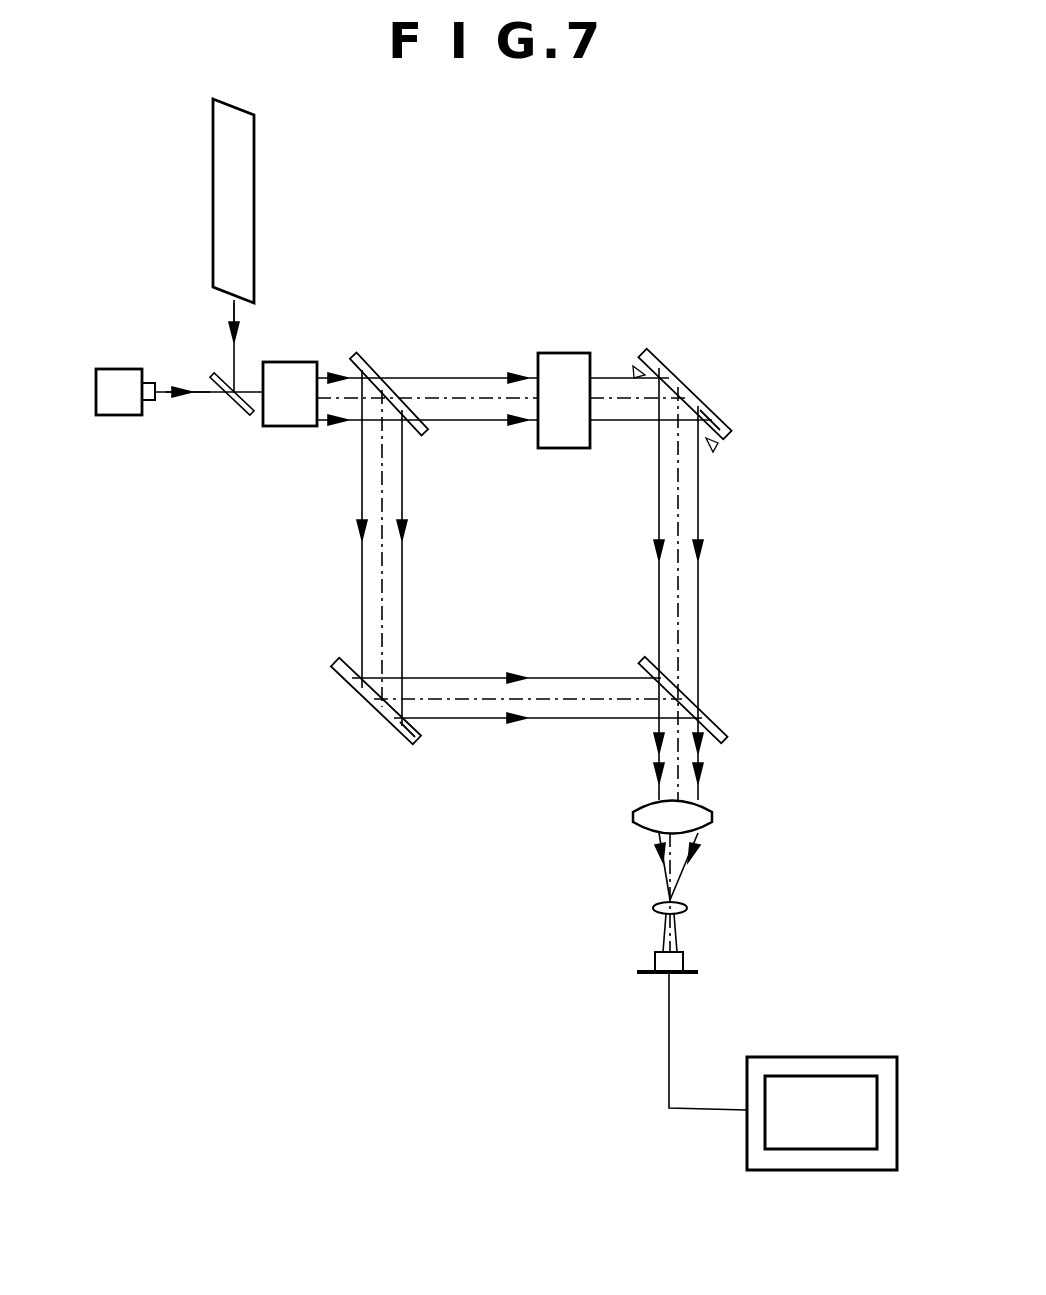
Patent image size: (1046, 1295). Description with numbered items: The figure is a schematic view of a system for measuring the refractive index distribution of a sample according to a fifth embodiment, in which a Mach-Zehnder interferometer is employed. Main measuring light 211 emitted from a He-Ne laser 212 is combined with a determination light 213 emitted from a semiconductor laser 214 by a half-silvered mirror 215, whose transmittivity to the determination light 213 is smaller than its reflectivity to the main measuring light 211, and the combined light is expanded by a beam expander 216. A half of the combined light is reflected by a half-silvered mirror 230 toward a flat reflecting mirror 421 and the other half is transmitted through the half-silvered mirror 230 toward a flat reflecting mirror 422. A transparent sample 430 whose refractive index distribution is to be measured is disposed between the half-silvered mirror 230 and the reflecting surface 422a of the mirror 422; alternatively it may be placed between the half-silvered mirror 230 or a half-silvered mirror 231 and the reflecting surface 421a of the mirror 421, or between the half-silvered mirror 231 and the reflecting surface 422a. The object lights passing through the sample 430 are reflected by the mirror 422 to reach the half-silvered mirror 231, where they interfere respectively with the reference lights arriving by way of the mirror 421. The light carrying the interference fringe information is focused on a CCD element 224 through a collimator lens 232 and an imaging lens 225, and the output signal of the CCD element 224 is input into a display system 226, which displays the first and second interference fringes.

The main measuring light 211 is at (237, 318).
The He-Ne laser 212 is at (250, 172).
The determination light 213 is at (200, 392).
The semiconductor laser 214 is at (128, 416).
The half-silvered mirror 215 is at (248, 414).
The beam expander 216 is at (301, 427).
The half-silvered mirror 230 is at (366, 358).
The transparent sample 430 is at (581, 353).
The flat reflecting mirror 422 is at (708, 405).
The reflecting surface 422a is at (699, 437).
The flat reflecting mirror 421 is at (398, 742).
The reflecting surface 421a is at (418, 728).
The half-silvered mirror 231 is at (726, 735).
The collimator lens 232 is at (712, 817).
The imaging lens 225 is at (652, 907).
The CCD element 224 is at (652, 963).
The display system 226 is at (830, 1057).